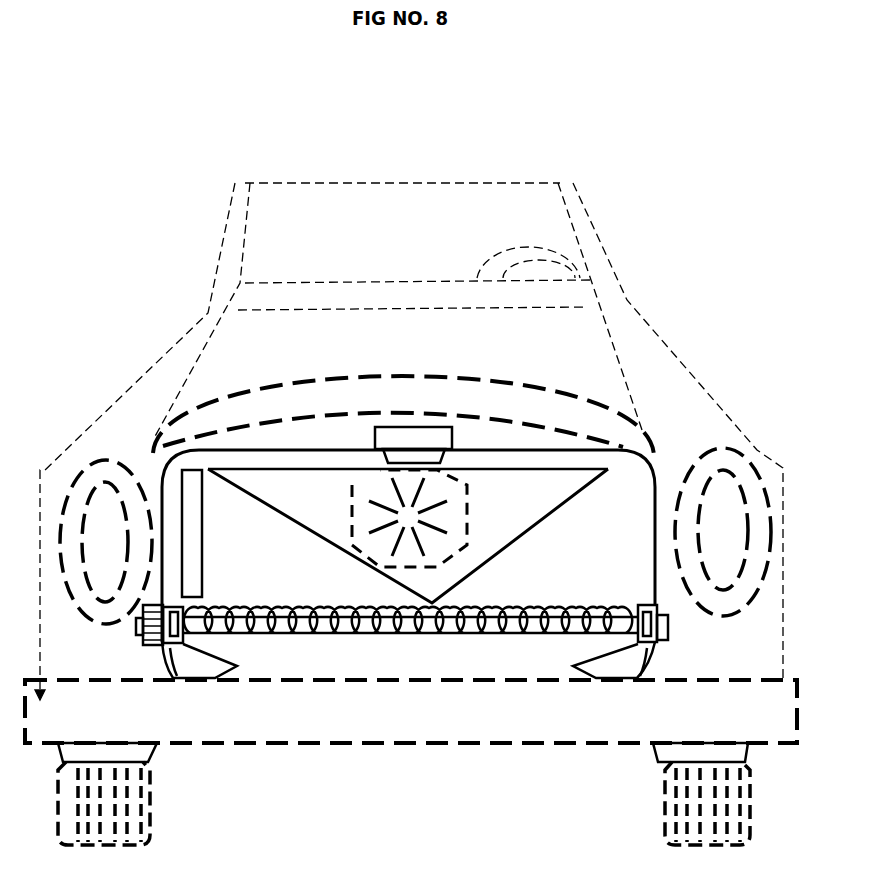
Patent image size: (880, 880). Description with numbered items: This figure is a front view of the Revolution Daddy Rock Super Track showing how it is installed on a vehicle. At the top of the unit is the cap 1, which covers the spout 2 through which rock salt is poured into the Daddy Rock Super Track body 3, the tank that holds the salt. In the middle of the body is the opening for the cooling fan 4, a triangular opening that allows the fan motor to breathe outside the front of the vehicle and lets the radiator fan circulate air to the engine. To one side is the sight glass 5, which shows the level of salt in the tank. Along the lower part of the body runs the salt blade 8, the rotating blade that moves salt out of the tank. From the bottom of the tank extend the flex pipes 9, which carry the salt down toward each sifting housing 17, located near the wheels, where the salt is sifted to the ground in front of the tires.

The cap 1 is at (432, 441).
The spout 2 is at (436, 458).
The Daddy Rock Super Track body 3 is at (568, 462).
The opening for the cooling fan 4 is at (333, 515).
The sight glass 5 is at (188, 494).
The salt blade 8 is at (383, 640).
The flex pipes 9 is at (208, 669).
The sifting housing 17 is at (127, 753).